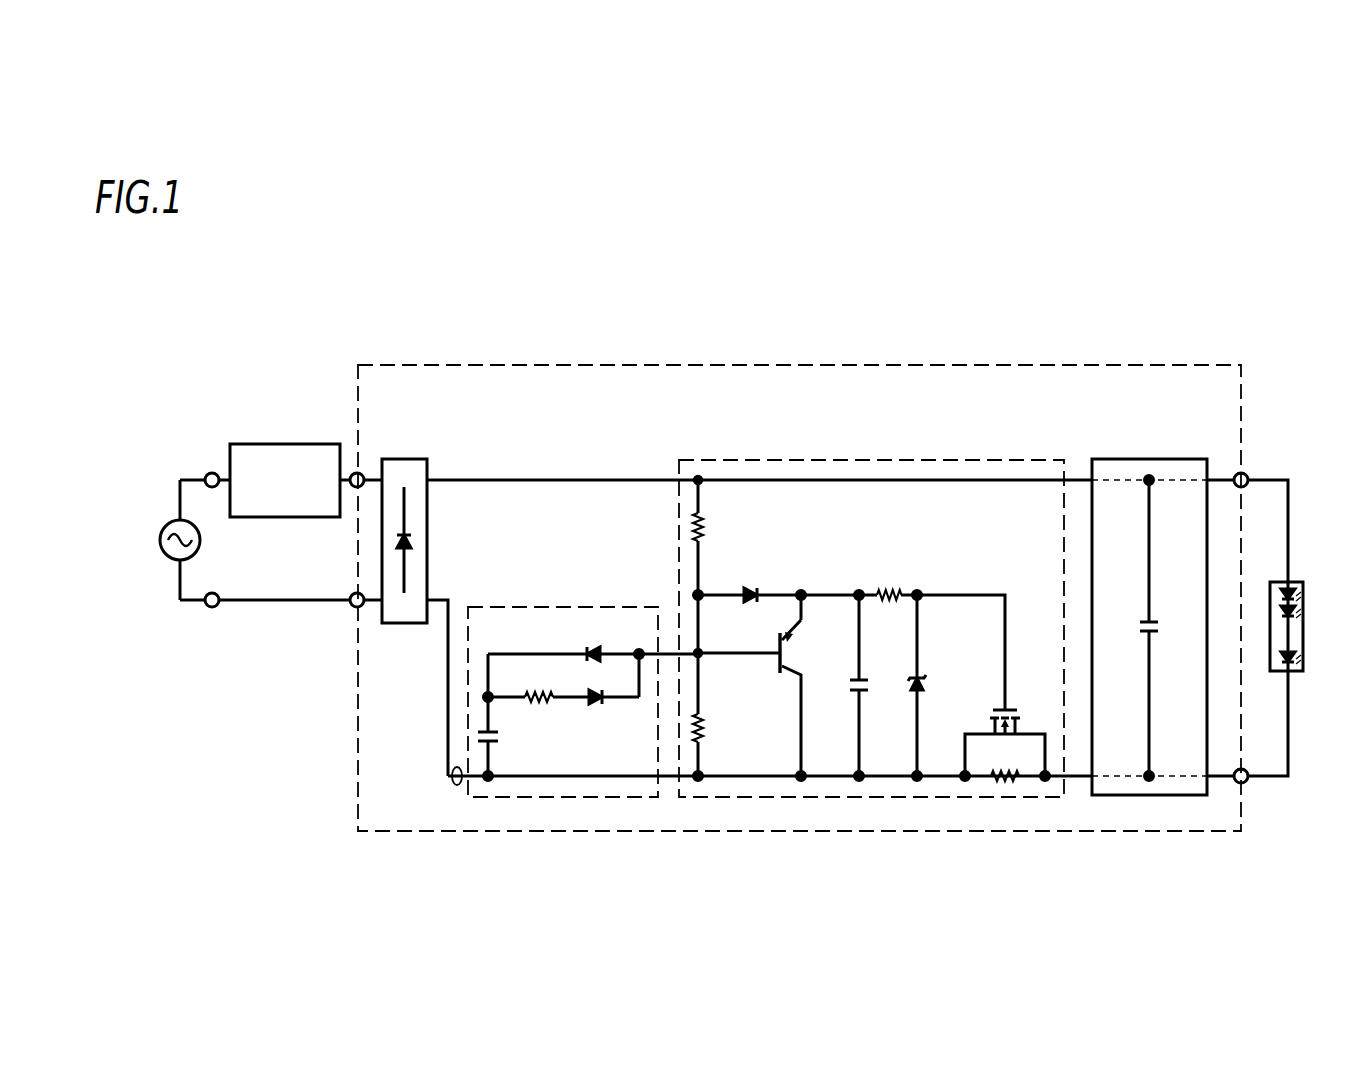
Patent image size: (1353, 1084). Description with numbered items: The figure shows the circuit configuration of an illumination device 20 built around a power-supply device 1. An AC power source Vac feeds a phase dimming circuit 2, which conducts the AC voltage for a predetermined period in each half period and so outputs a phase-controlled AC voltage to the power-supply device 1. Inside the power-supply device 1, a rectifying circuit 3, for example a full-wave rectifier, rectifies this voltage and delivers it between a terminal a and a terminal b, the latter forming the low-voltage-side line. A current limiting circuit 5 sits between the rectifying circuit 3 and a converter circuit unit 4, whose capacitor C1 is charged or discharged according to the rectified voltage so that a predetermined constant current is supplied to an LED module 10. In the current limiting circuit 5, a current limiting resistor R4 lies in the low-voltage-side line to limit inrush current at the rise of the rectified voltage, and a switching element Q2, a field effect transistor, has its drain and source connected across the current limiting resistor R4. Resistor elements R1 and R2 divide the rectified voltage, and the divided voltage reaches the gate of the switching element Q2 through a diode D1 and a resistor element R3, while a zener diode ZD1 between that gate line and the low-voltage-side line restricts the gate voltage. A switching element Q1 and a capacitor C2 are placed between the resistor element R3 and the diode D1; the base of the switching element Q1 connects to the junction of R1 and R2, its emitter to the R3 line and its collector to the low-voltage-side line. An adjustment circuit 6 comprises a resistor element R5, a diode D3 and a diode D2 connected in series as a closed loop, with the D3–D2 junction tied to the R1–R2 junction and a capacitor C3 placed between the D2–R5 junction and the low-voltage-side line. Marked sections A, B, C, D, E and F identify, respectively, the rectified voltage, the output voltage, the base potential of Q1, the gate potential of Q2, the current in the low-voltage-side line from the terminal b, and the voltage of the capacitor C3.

The illumination device 20 is at (167, 290).
The power-supply device 1 is at (800, 364).
The phase dimming circuit 2 is at (288, 443).
The rectifying circuit 3 is at (405, 458).
The converter circuit unit 4 is at (1149, 599).
The current limiting circuit 5 is at (873, 459).
The adjustment circuit 6 is at (565, 605).
The LED module 10 is at (1297, 580).
The section A is at (661, 476).
The section B is at (1221, 474).
The section C is at (707, 661).
The section D is at (926, 589).
The section E is at (450, 783).
The section F is at (481, 680).
The terminal a is at (443, 463).
The terminal b is at (438, 672).
The AC power source Vac is at (240, 540).
The resistor element R1 is at (716, 537).
The resistor element R2 is at (716, 685).
The resistor element R3 is at (897, 583).
The current limiting resistor R4 is at (1005, 764).
The resistor element R5 is at (538, 709).
The diode D1 is at (749, 584).
The diode D2 is at (593, 642).
The diode D3 is at (611, 708).
The capacitor C1 is at (1168, 628).
The capacitor C2 is at (875, 685).
The capacitor C3 is at (503, 754).
The switching element Q1 is at (768, 685).
The switching element Q2 is at (981, 685).
The zener diode ZD1 is at (939, 685).